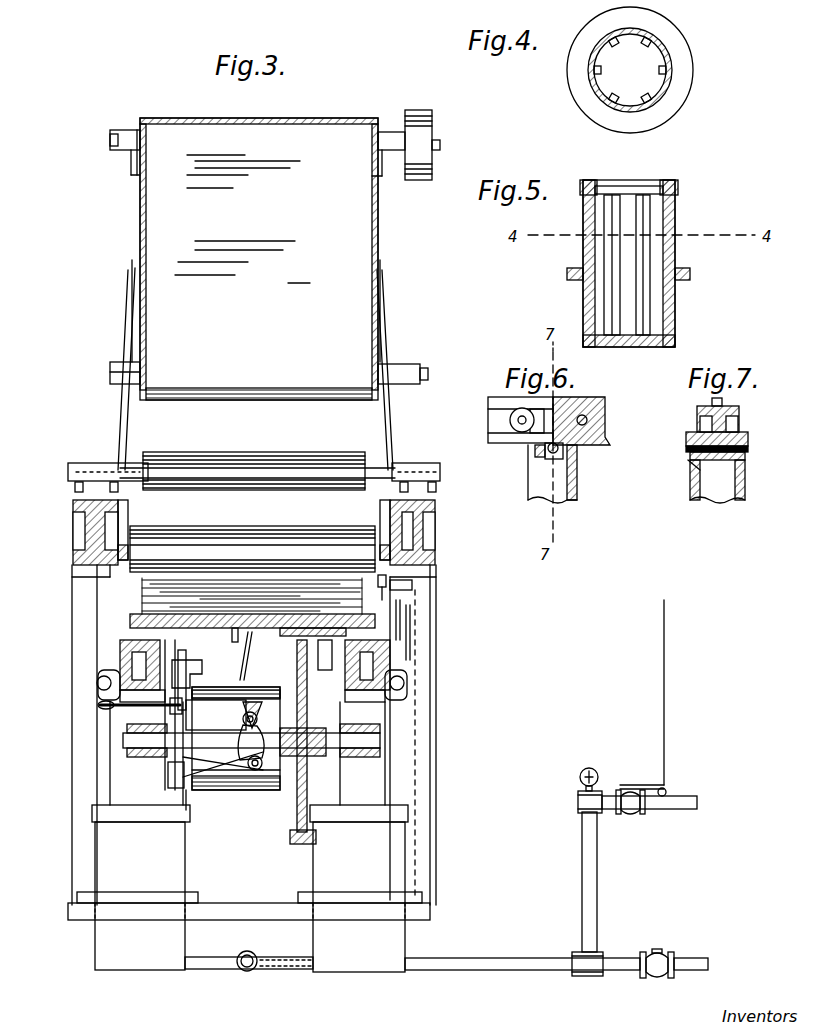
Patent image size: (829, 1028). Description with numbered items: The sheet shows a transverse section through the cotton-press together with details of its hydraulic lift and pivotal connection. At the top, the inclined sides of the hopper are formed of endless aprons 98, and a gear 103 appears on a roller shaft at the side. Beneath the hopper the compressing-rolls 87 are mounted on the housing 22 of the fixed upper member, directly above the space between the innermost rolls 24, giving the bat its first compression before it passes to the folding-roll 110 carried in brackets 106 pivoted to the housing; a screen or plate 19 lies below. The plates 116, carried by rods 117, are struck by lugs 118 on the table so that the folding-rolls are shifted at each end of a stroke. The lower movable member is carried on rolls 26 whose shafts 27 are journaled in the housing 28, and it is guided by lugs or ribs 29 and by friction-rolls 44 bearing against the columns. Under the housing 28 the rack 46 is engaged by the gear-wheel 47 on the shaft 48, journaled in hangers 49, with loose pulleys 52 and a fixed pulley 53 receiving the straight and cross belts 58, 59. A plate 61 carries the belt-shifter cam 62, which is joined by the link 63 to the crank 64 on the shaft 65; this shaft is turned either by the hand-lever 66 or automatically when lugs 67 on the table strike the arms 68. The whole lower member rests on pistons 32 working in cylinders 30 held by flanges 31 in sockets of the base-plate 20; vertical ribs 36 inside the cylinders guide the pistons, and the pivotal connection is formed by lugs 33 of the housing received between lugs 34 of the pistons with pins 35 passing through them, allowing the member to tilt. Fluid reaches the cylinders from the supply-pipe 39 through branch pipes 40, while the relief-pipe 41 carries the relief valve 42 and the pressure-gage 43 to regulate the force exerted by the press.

In FIG. 3, the endless aprons 98 is at (259, 259).
In FIG. 3, the gear 103 is at (424, 112).
In FIG. 3, the compressing-rolls 87 is at (254, 471).
In FIG. 3, the housing 22 is at (73, 552).
In FIG. 3, the rolls 24 is at (252, 549).
In FIG. 3, the folding-roll 110 is at (252, 567).
In FIG. 3, the screen plate 19 is at (150, 618).
In FIG. 3, the rack 46 is at (300, 636).
In FIG. 3, the rolls 26 is at (235, 628).
In FIG. 6, the rolls 26 is at (522, 398).
In FIG. 3, the arms 68 is at (254, 638).
In FIG. 3, the brackets 106 is at (380, 590).
In FIG. 3, the plates 116 is at (392, 598).
In FIG. 3, the rods 117 is at (400, 614).
In FIG. 3, the lugs 118 is at (408, 632).
In FIG. 3, the lugs or ribs 29 is at (130, 645).
In FIG. 3, the friction-rolls 44 is at (98, 683).
In FIG. 3, the hand-lever 66 is at (98, 706).
In FIG. 3, the lugs 67 is at (204, 652).
In FIG. 3, the shaft 65 is at (182, 692).
In FIG. 3, the hangers 49 is at (253, 732).
In FIG. 3, the shaft 48 is at (123, 740).
In FIG. 3, the gear-wheel 47 is at (290, 840).
In FIG. 3, the fixed pulley 53 is at (238, 688).
In FIG. 3, the loose pulleys 52 is at (215, 790).
In FIG. 3, the plate 61 is at (216, 715).
In FIG. 3, the cross belt 59 is at (249, 709).
In FIG. 3, the belt-shifter cam 62 is at (256, 713).
In FIG. 3, the link 63 is at (223, 764).
In FIG. 3, the crank 64 is at (174, 790).
In FIG. 3, the straight belt 58 is at (198, 796).
In FIG. 3, the pistons 32 is at (247, 753).
In FIG. 3, the cylinders 30 is at (250, 888).
In FIG. 4, the cylinders 30 is at (668, 66).
In FIG. 5, the cylinders 30 is at (583, 250).
In FIG. 3, the flanges 31 is at (200, 896).
In FIG. 4, the flanges 31 is at (688, 82).
In FIG. 5, the flanges 31 is at (567, 273).
In FIG. 3, the base-plate 20 is at (240, 912).
In FIG. 3, the branch pipes 40 is at (224, 962).
In FIG. 3, the supply-pipe 39 is at (247, 972).
In FIG. 3, the relief-pipe 41 is at (582, 861).
In FIG. 3, the pressure-gage 43 is at (580, 770).
In FIG. 3, the valve 42 is at (630, 810).
In FIG. 4, the vertical ribs 36 is at (622, 94).
In FIG. 5, the vertical ribs 36 is at (643, 300).
In FIG. 6, the shafts 27 is at (510, 420).
In FIG. 6, the housing 28 is at (600, 435).
In FIG. 7, the housing 28 is at (740, 412).
In FIG. 6, the lugs 33 is at (578, 460).
In FIG. 7, the lugs 33 is at (717, 481).
In FIG. 6, the lugs 34 is at (537, 452).
In FIG. 7, the lugs 34 is at (690, 460).
In FIG. 6, the pins 35 is at (550, 452).
In FIG. 7, the pins 35 is at (748, 449).